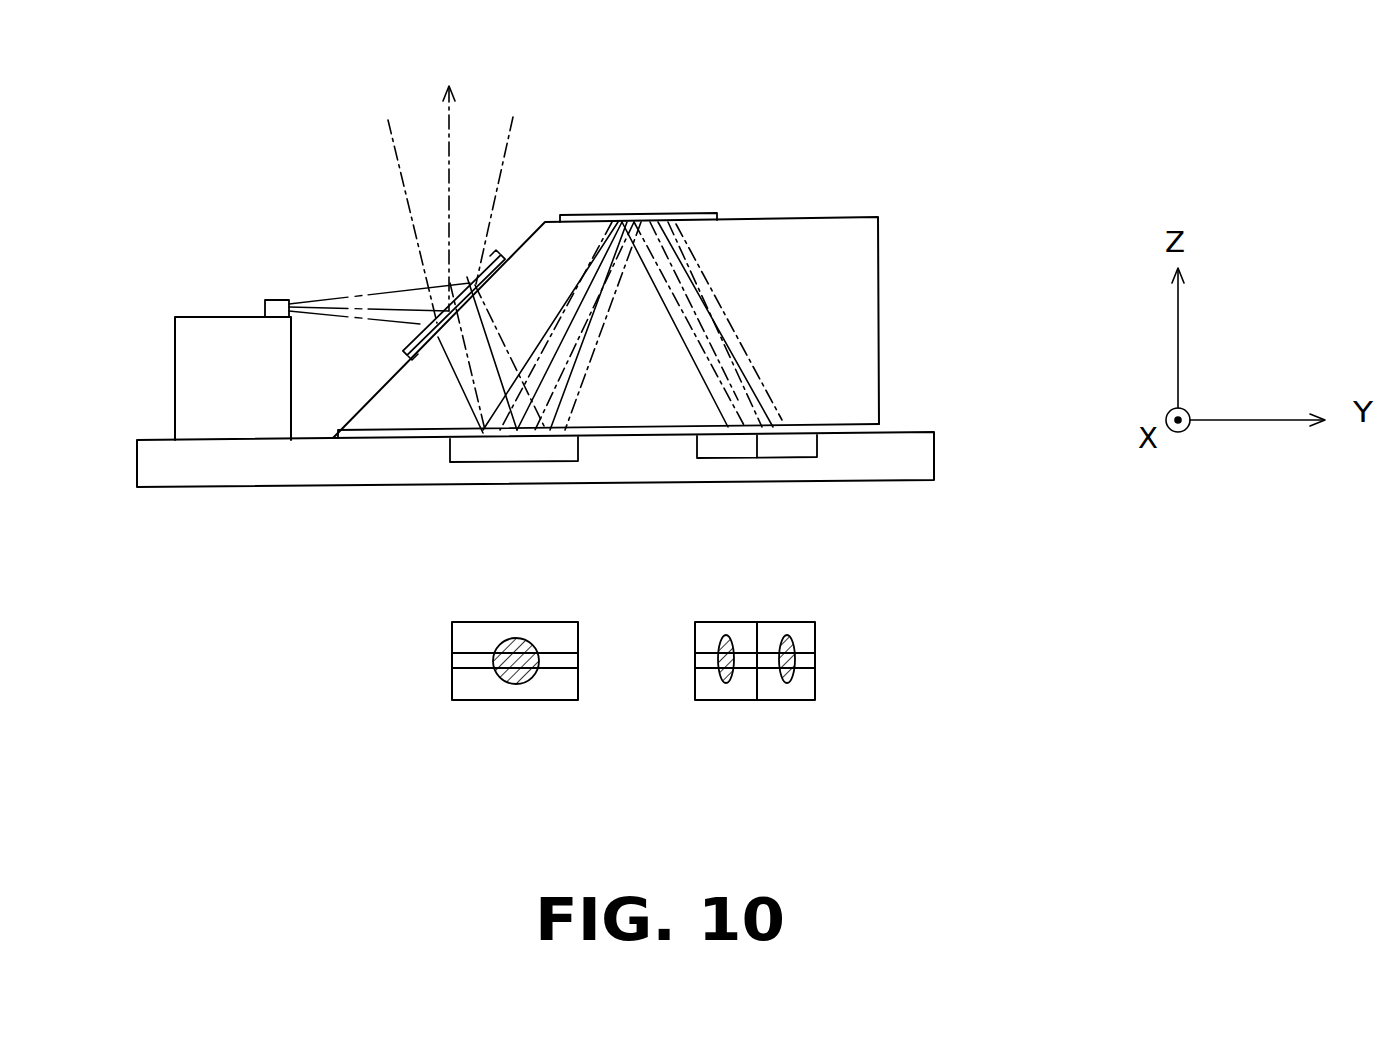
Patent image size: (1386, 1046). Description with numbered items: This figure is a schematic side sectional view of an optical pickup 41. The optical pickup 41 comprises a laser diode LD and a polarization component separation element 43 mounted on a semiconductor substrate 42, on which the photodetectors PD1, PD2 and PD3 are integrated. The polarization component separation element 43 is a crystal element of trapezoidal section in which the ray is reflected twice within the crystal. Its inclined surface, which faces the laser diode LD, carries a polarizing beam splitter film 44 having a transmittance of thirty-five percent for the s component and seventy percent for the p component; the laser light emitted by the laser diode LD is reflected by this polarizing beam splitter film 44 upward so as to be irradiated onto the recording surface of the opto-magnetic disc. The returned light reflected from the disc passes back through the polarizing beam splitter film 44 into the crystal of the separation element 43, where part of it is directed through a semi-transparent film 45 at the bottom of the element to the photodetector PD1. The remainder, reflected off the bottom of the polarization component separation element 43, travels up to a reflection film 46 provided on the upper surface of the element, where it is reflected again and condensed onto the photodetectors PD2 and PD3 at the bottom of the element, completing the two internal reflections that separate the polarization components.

The optical pickup 41 is at (1250, 165).
The semiconductor substrate 42 is at (919, 459).
The polarization component separation element 43 is at (865, 258).
The polarizing beam splitter film 44 is at (417, 318).
The semi-transparent film 45 is at (383, 437).
The reflection film 46 is at (700, 213).
The laser diode LD is at (277, 300).
The photodetector PD1 is at (525, 453).
The photodetector PD2 is at (745, 458).
The photodetector PD3 is at (790, 712).